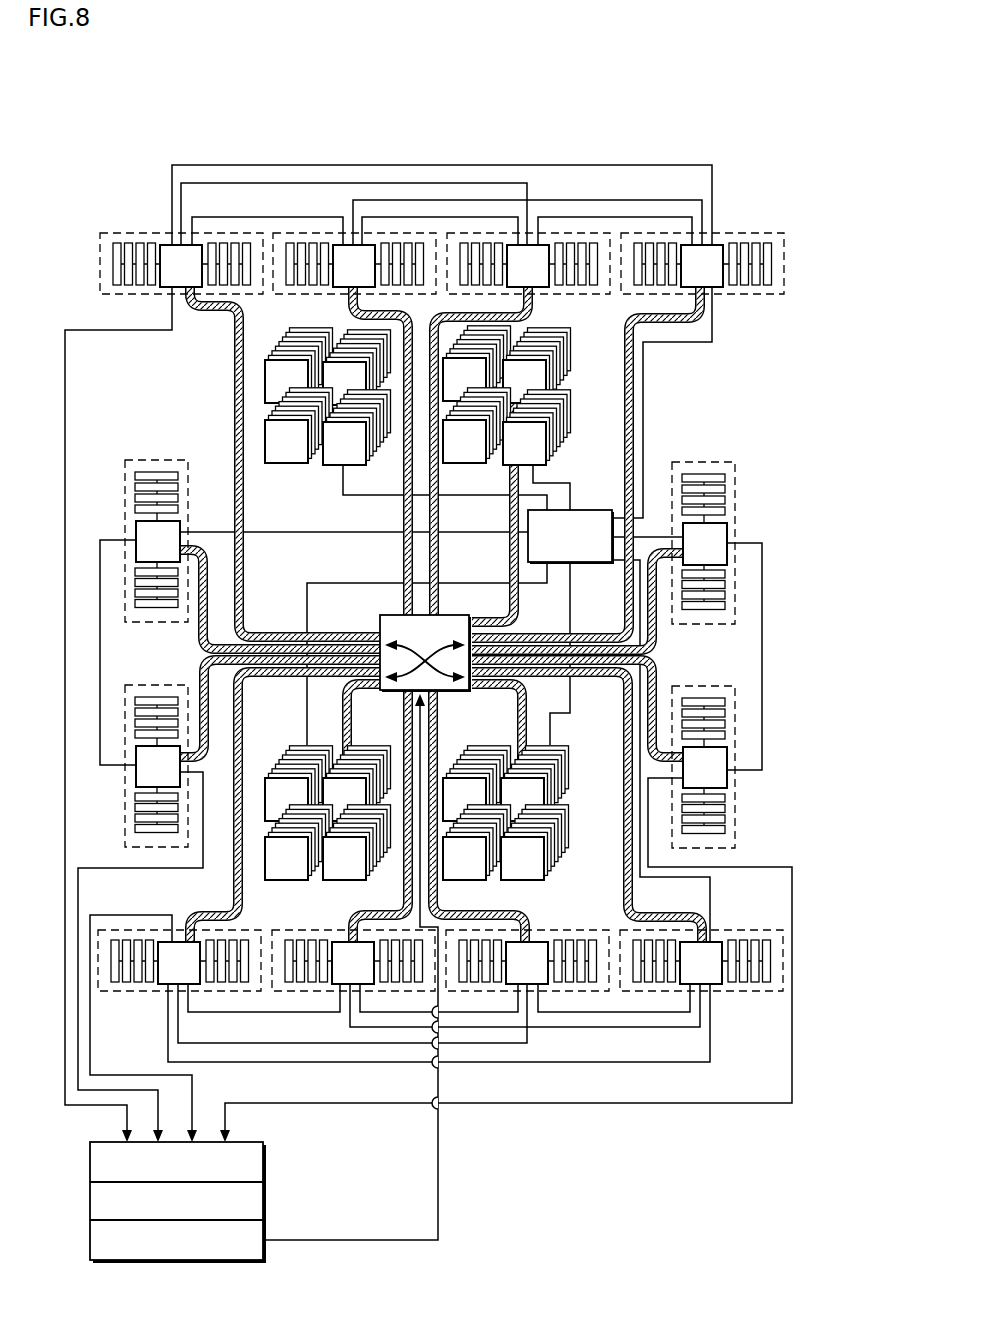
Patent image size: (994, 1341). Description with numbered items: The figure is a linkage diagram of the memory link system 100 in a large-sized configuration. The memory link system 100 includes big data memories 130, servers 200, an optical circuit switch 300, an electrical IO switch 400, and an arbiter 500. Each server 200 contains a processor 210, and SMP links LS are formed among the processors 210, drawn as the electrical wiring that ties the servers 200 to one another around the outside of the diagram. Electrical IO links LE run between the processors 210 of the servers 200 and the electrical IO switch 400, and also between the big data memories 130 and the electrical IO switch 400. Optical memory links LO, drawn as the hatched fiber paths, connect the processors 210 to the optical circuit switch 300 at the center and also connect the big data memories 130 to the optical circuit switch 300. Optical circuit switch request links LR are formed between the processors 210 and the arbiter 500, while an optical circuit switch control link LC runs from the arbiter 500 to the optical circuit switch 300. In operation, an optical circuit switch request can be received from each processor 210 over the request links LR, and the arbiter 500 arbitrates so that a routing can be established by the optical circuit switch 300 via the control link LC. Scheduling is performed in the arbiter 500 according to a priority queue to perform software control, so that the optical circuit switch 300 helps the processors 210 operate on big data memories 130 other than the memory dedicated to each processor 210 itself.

The memory link system 100 is at (760, 76).
The server 200 is at (745, 232).
The processor 210 is at (722, 295).
The big data memory 130 is at (577, 345).
The optical circuit switch 300 is at (393, 613).
The electrical IO switch 400 is at (592, 510).
The arbiter 500 is at (265, 1172).
The SMP link LS is at (662, 163).
The optical memory link LO is at (636, 416).
The electrical IO link LE is at (273, 533).
The optical circuit switch request link LR is at (720, 1105).
The optical circuit switch control link LC is at (438, 1215).